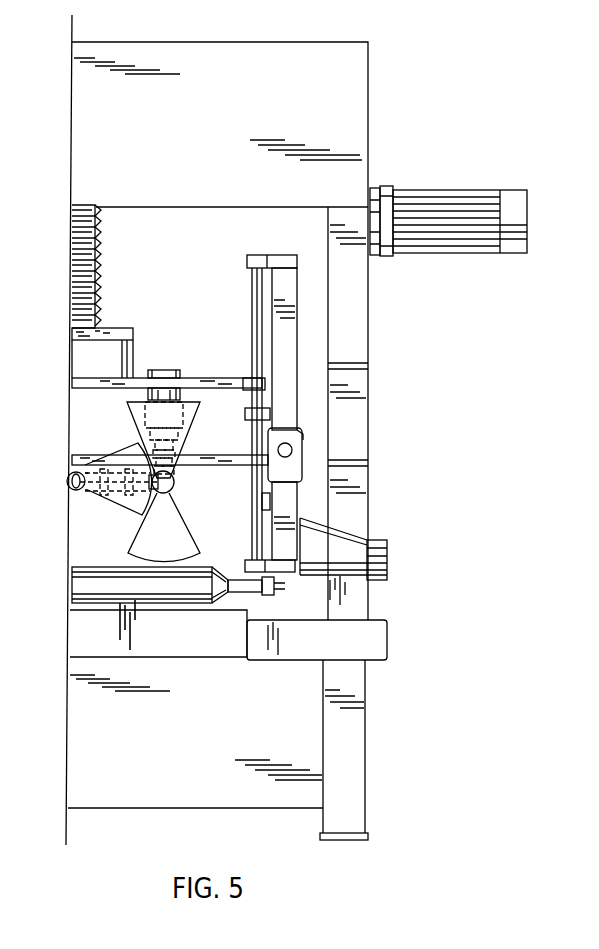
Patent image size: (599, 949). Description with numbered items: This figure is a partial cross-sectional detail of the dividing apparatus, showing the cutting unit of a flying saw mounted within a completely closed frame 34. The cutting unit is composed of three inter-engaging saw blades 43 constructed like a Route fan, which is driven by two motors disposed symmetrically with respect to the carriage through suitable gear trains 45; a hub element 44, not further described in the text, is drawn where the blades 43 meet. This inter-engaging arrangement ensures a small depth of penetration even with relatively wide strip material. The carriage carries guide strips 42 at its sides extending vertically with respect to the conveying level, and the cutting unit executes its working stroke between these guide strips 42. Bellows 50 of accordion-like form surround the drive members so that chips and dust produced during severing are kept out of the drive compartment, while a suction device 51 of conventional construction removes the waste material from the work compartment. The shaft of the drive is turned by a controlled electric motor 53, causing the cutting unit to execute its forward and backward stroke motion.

The frame 34 is at (355, 741).
The guide strips 42 is at (253, 316).
The saw blades 43 is at (140, 539).
The hub bearing 44 is at (165, 394).
The gear trains 45 is at (114, 480).
The bellows 50 is at (72, 272).
The suction device 51 is at (338, 545).
The electric motor 53 is at (467, 200).